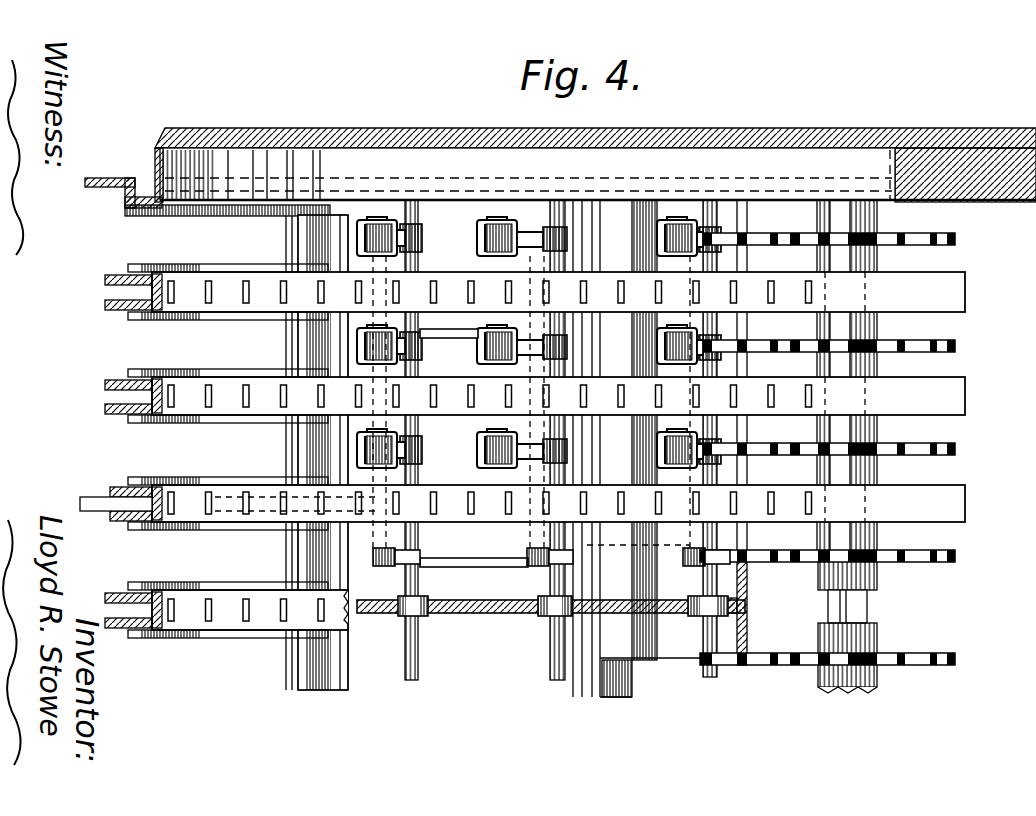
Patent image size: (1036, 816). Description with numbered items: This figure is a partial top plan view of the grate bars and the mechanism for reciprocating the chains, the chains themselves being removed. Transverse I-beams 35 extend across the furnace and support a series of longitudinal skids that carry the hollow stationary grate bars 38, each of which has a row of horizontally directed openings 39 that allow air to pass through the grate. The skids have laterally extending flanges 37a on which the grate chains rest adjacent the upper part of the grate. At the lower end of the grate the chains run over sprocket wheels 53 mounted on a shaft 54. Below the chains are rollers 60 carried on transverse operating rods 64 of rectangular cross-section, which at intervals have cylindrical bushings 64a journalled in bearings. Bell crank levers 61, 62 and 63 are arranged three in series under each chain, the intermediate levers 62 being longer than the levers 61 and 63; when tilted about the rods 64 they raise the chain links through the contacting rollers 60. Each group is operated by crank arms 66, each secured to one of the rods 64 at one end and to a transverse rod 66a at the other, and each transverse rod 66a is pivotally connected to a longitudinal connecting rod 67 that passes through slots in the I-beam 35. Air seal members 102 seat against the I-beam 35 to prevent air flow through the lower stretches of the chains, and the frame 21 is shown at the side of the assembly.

The frame plate 21 is at (560, 309).
The transverse I-beam 35 is at (300, 690).
The laterally extending flange 37a is at (165, 374).
The stationary grate bar 38 is at (237, 280).
The horizontally directed opening 39 is at (236, 388).
The sprocket wheel 53 is at (955, 240).
The shaft 54 is at (875, 446).
The roller 60 is at (357, 236).
The bell crank lever 61 is at (388, 220).
The intermediate bell crank lever 62 is at (515, 222).
The bell crank lever 63 is at (690, 222).
The transverse operating rod 64 is at (553, 226).
The cylindrical bushing 64a is at (555, 615).
The crank arm 66 is at (395, 568).
The transverse rod 66a is at (375, 365).
The longitudinal connecting rod 67 is at (462, 584).
The air seal member 102 is at (683, 650).